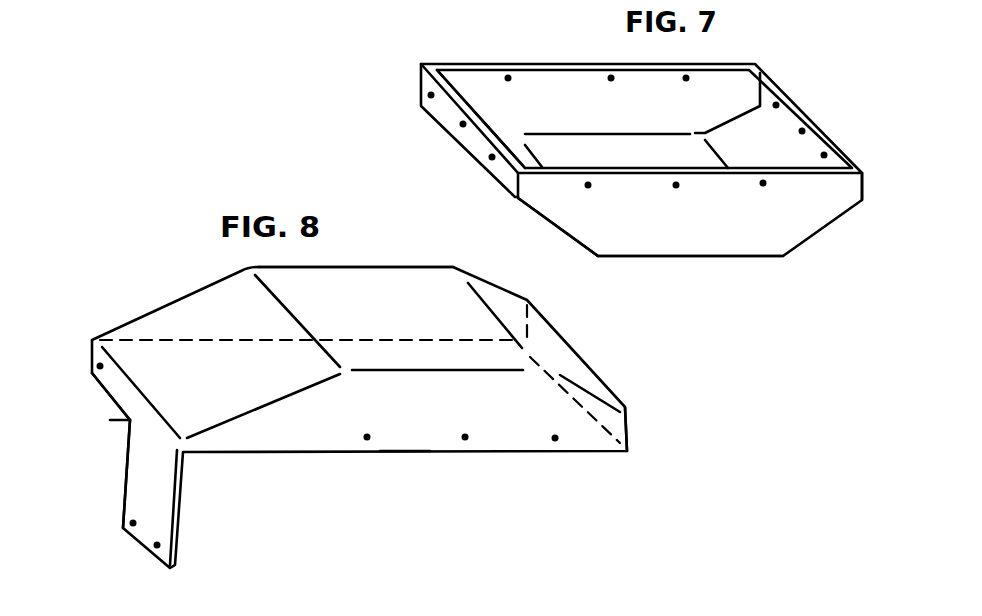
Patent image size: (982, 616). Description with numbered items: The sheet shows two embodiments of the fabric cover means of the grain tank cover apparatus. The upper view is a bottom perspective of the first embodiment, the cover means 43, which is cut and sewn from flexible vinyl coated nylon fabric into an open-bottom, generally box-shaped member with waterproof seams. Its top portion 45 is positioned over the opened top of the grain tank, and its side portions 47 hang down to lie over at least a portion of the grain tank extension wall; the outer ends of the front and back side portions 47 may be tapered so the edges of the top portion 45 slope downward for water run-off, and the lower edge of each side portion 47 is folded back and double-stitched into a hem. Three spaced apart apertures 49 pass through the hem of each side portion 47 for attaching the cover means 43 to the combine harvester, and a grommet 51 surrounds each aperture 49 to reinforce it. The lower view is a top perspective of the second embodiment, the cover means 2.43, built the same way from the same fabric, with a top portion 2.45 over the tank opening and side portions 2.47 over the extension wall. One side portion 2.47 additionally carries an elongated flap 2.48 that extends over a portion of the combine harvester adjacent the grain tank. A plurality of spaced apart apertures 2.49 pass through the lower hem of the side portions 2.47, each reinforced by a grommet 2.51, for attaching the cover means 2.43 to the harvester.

In FIG. 7, the cover means 43 is at (696, 233).
In FIG. 7, the top portion 45 is at (666, 233).
In FIG. 7, the side portions 47 is at (884, 157).
In FIG. 7, the apertures 49 is at (253, 0).
In FIG. 7, the grommet 51 is at (820, 266).
In FIG. 8, the cover means 2.43 is at (407, 262).
In FIG. 8, the top portion 2.45 is at (273, 278).
In FIG. 8, the side portions 2.47 is at (128, 405).
In FIG. 8, the elongated flap 2.48 is at (137, 478).
In FIG. 8, the apertures 2.49 is at (120, 416).
In FIG. 8, the grommet 2.51 is at (97, 366).